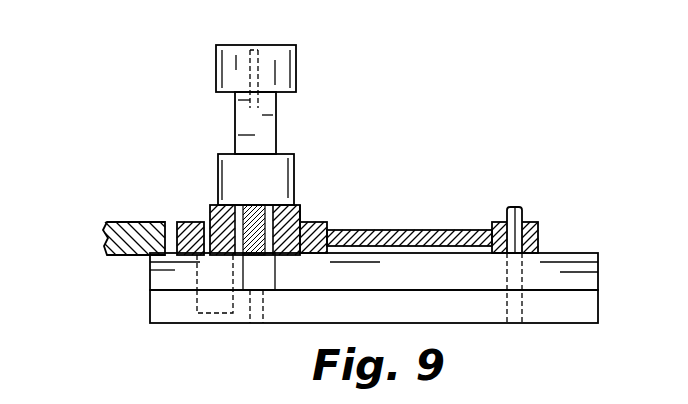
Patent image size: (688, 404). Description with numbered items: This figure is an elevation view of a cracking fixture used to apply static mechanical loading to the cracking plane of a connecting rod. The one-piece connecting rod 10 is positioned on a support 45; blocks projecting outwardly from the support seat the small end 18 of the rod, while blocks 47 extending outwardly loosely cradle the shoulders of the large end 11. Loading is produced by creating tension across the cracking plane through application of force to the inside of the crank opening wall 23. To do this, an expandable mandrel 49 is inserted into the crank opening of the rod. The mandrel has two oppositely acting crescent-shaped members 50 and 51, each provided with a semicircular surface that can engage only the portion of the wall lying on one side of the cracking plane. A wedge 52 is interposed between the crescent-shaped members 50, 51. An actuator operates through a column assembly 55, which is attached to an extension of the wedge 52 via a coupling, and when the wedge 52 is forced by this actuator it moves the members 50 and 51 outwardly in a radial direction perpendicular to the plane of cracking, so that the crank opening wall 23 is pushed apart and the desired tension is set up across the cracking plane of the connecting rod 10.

The one-piece connecting rod 10 is at (495, 186).
The large end 11 is at (318, 220).
The small end 18 is at (530, 212).
The crank opening wall 23 is at (213, 220).
The support 45 is at (395, 277).
The block 47 is at (148, 223).
The expandable mandrel 49 is at (302, 186).
The crescent-shaped member 50 is at (195, 262).
The crescent-shaped member 51 is at (290, 292).
The wedge 52 is at (258, 222).
The column assembly 55 is at (260, 130).